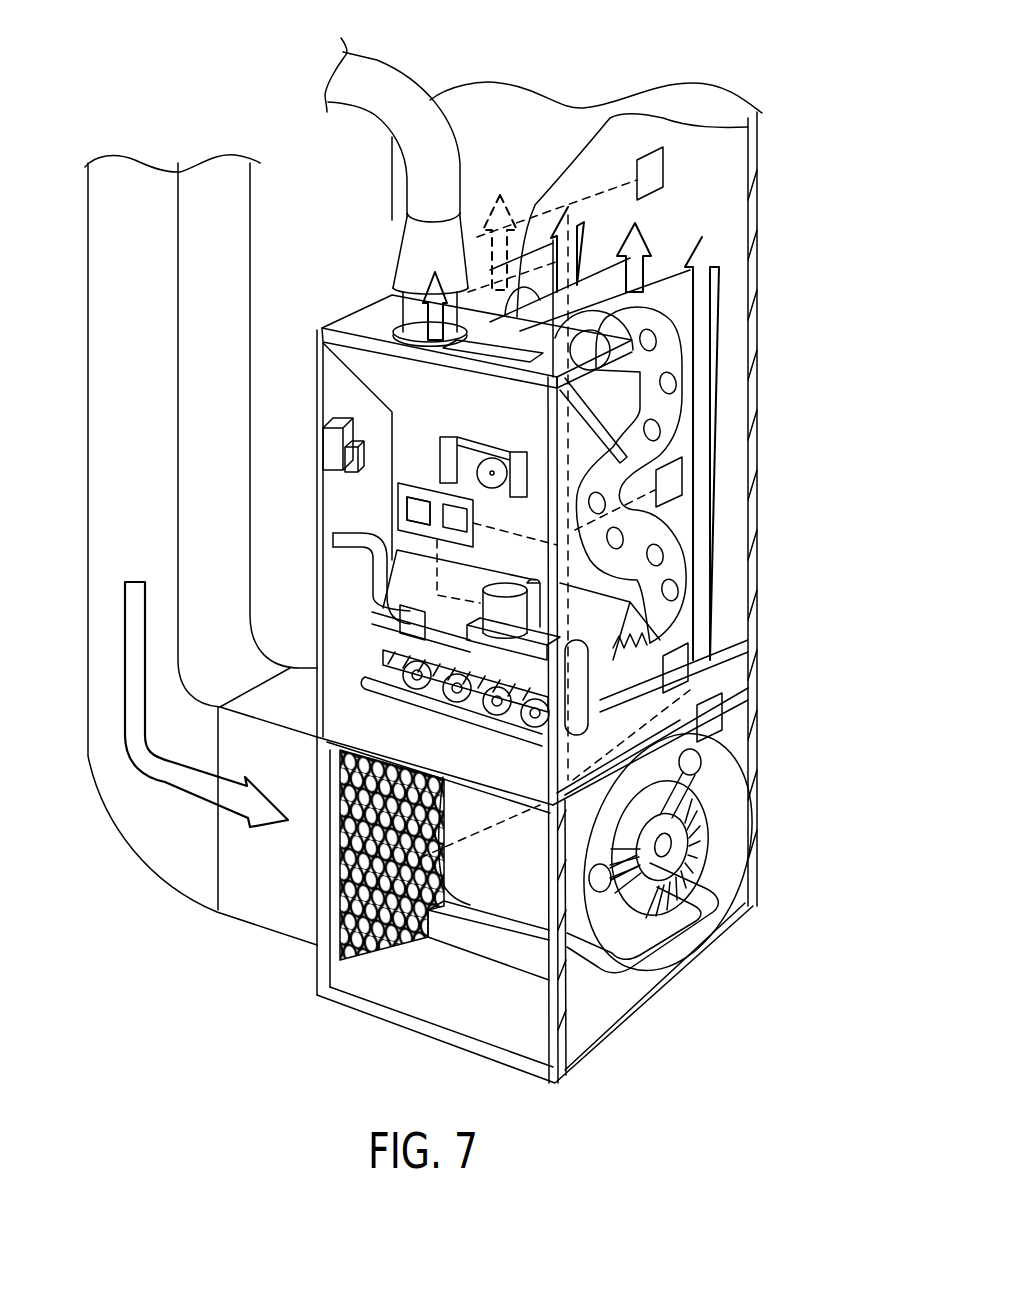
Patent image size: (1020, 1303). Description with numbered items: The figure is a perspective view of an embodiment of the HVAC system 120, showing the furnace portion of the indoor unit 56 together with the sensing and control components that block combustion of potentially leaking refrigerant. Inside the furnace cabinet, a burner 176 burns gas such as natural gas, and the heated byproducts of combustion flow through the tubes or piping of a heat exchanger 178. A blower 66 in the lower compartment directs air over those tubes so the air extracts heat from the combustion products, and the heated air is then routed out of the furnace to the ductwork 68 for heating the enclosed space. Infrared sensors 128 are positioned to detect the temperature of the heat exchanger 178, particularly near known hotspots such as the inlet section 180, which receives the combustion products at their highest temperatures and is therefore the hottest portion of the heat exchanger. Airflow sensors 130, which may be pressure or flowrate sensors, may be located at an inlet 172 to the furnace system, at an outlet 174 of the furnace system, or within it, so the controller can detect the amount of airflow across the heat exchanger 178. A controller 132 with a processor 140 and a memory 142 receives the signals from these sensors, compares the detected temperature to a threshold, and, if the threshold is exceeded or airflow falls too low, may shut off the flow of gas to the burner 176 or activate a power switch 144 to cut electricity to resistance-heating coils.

The indoor unit 56 is at (800, 823).
The blower 66 is at (728, 800).
The ductwork 68 is at (500, 135).
The HVAC system 120 is at (359, 1063).
The infrared sensors 128 is at (683, 470).
The airflow sensors 130 is at (663, 163).
The controller 132 is at (396, 495).
The processor 140 is at (418, 500).
The memory 142 is at (457, 505).
The power switch 144 is at (500, 612).
The inlet 172 is at (733, 657).
The outlet 174 is at (727, 193).
The burner 176 is at (433, 698).
The heat exchanger 178 is at (663, 362).
The inlet section 180 is at (640, 640).